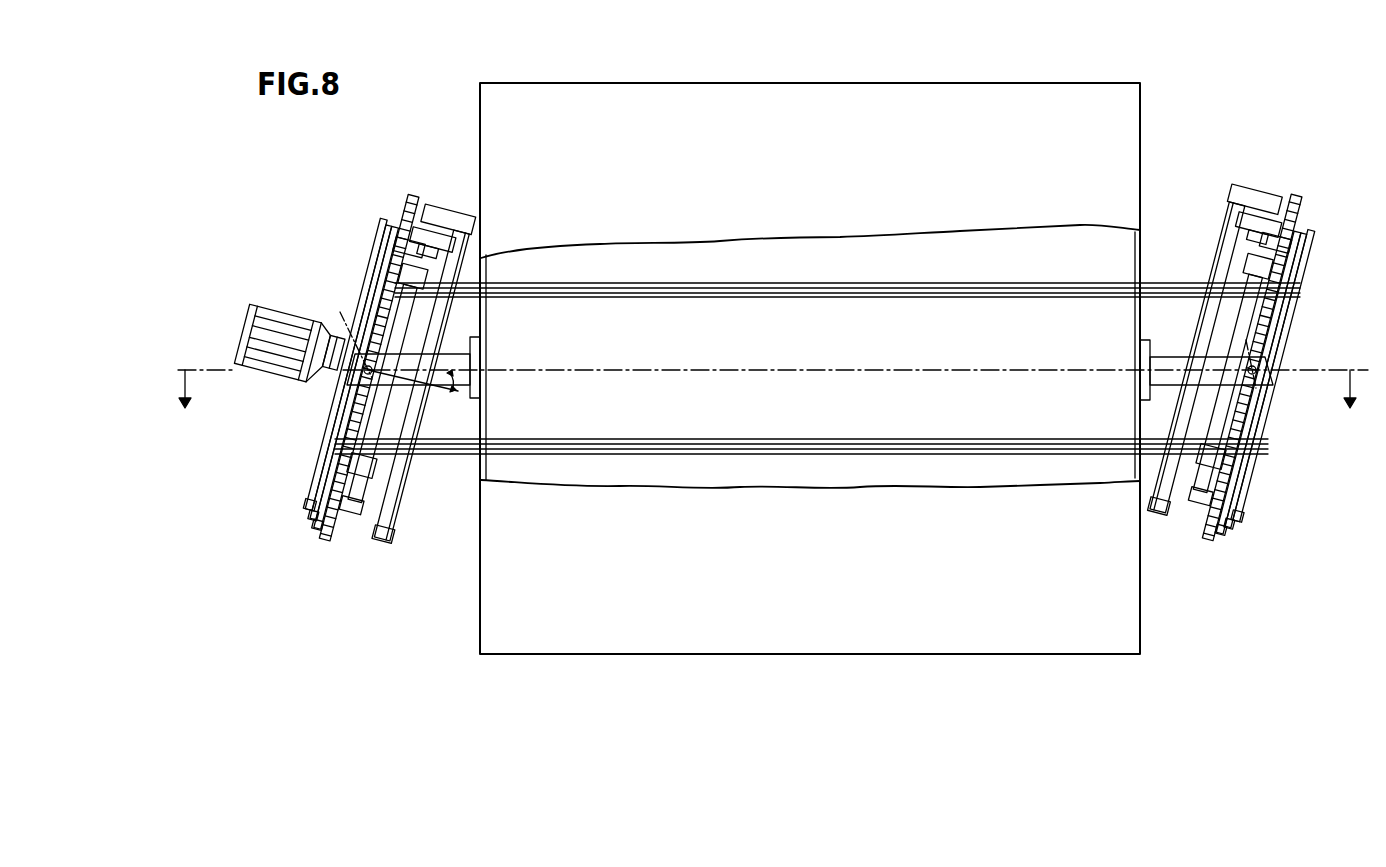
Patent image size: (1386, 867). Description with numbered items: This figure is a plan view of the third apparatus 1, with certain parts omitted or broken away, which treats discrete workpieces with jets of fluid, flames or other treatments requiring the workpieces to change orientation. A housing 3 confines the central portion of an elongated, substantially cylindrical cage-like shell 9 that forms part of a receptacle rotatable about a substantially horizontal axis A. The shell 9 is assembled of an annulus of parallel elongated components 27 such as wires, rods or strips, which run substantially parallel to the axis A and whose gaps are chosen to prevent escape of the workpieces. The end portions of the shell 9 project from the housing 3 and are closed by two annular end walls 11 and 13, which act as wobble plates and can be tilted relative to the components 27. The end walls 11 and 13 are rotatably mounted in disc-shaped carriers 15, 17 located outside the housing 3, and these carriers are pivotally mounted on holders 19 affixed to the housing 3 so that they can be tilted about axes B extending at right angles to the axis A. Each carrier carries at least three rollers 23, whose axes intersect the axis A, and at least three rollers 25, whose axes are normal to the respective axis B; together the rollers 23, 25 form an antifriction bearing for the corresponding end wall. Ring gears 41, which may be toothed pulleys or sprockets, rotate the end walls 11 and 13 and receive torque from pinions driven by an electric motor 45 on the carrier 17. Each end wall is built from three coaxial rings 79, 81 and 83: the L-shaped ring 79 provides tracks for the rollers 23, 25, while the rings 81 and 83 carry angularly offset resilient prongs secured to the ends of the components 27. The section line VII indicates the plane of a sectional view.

The apparatus 1 is at (1047, 264).
The housing 3 is at (1101, 106).
The cage-like shell 9 is at (698, 284).
The end wall 11 is at (1258, 346).
The end wall 13 is at (397, 349).
The carrier 15 is at (1240, 218).
The carrier 17 is at (468, 235).
The holder 19 is at (454, 362).
The roller 23 is at (425, 243).
The roller 25 is at (349, 518).
The elongated component 27 is at (779, 285).
The ring gear 41 is at (417, 200).
The electric motor 45 is at (288, 363).
The ring 79 is at (320, 488).
The ring 81 is at (325, 463).
The ring 83 is at (332, 443).
The axis A is at (853, 368).
The axis B is at (1281, 390).
The section line VII- VII is at (767, 409).